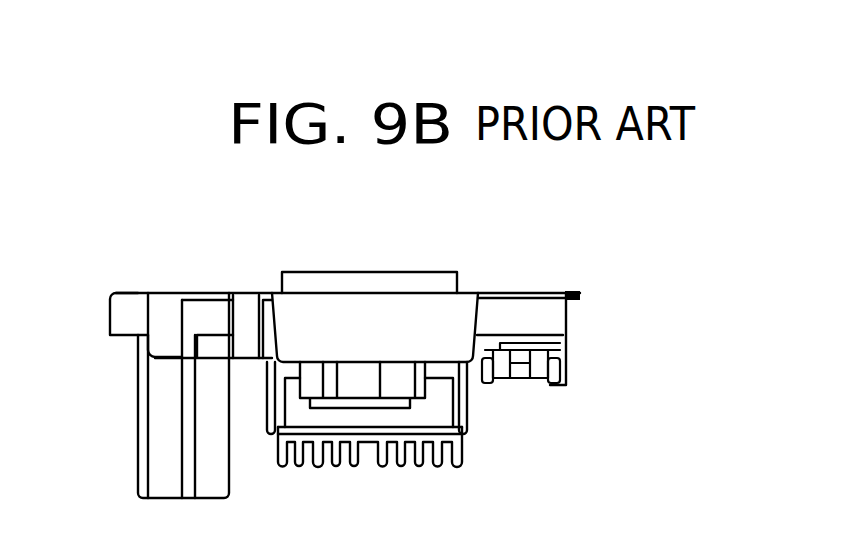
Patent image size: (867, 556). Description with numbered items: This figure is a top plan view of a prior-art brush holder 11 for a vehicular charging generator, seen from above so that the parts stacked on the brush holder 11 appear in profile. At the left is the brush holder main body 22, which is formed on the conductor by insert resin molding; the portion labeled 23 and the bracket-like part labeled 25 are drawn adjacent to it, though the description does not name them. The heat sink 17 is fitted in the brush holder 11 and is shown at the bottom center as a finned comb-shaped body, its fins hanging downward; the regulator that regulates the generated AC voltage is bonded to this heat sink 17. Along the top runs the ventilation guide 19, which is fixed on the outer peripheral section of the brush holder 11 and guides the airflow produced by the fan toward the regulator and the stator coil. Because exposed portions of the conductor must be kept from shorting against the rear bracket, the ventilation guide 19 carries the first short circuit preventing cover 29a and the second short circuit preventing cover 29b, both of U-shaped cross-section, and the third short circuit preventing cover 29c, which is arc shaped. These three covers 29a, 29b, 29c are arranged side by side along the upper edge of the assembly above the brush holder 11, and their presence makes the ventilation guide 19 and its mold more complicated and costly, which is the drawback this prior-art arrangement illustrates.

The brush holder 11 is at (580, 370).
The heat sink 17 is at (390, 462).
The ventilation guide 19 is at (547, 295).
The brush holder main body 22 is at (137, 377).
The connector housing 23 is at (137, 438).
The shield case 25 is at (475, 413).
The first short circuit preventing cover 29a is at (170, 308).
The second short circuit preventing cover 29b is at (248, 312).
The third short circuit preventing cover 29c is at (443, 317).